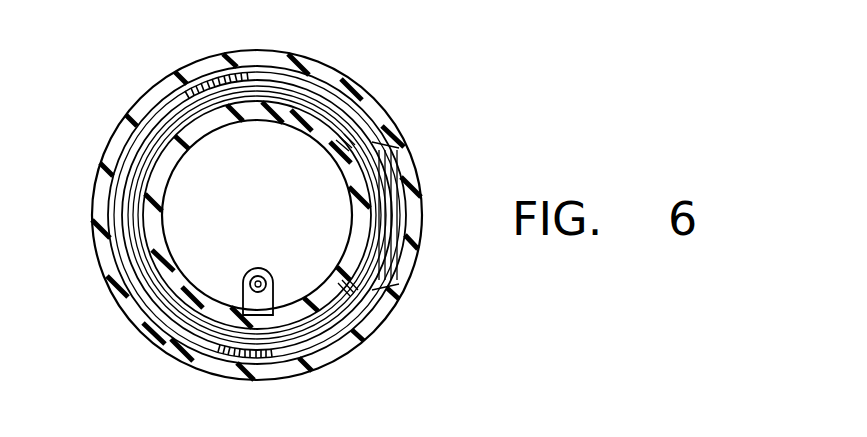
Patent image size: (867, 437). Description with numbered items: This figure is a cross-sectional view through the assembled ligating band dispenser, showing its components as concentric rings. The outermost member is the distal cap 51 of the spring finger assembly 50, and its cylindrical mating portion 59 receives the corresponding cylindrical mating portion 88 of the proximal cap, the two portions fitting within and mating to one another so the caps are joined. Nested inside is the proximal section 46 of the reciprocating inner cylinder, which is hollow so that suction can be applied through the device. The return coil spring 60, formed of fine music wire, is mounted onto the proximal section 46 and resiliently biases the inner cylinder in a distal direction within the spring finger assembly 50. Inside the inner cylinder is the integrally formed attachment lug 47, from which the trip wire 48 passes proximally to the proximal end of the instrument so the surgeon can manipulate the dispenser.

The cylindrical mating portion 88 is at (204, 75).
The distal cap 51 is at (366, 91).
The cylindrical mating portion 59 is at (153, 334).
The spring finger assembly 50 is at (368, 340).
The proximal section 46 is at (177, 145).
The return coil spring 60 is at (362, 160).
The attachment lug 47 is at (248, 300).
The trip wire 48 is at (262, 278).